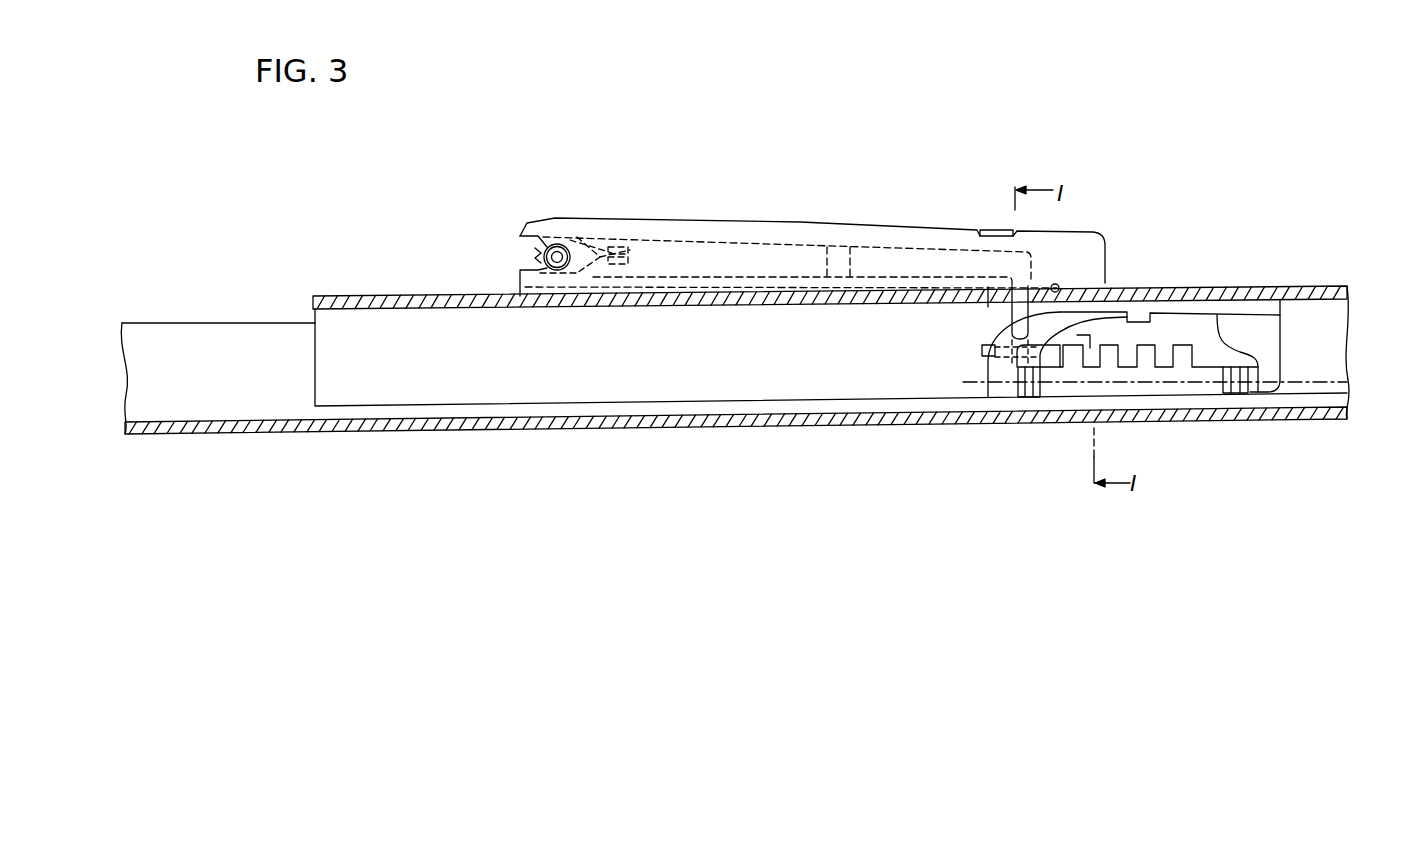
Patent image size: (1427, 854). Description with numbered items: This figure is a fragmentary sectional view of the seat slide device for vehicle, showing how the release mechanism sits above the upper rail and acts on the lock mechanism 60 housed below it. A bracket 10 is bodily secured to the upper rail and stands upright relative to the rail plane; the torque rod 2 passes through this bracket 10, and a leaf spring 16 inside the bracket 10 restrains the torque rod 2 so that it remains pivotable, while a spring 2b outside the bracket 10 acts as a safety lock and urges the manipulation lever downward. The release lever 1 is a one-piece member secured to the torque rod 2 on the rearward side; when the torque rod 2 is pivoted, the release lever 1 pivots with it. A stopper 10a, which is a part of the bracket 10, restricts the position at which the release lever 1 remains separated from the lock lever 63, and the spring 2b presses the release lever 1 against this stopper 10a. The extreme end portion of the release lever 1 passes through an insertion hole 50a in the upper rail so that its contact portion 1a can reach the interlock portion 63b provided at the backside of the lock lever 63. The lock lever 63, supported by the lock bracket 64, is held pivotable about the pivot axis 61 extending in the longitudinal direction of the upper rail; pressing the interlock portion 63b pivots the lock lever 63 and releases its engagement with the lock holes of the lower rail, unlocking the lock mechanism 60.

The release lever 1 is at (878, 222).
The contact portion 1a is at (1017, 326).
The torque rod 2 is at (562, 240).
The spring 2b is at (600, 231).
The bracket 10 is at (697, 253).
The stopper 10a is at (992, 227).
The leaf spring 16 is at (627, 228).
The insertion hole 50a is at (1052, 285).
The lock mechanism 60 is at (1316, 357).
The pivot axis 61 is at (1350, 382).
The lock lever 63 is at (1175, 377).
The interlock portion 63b is at (980, 352).
The lock bracket 64 is at (1284, 309).